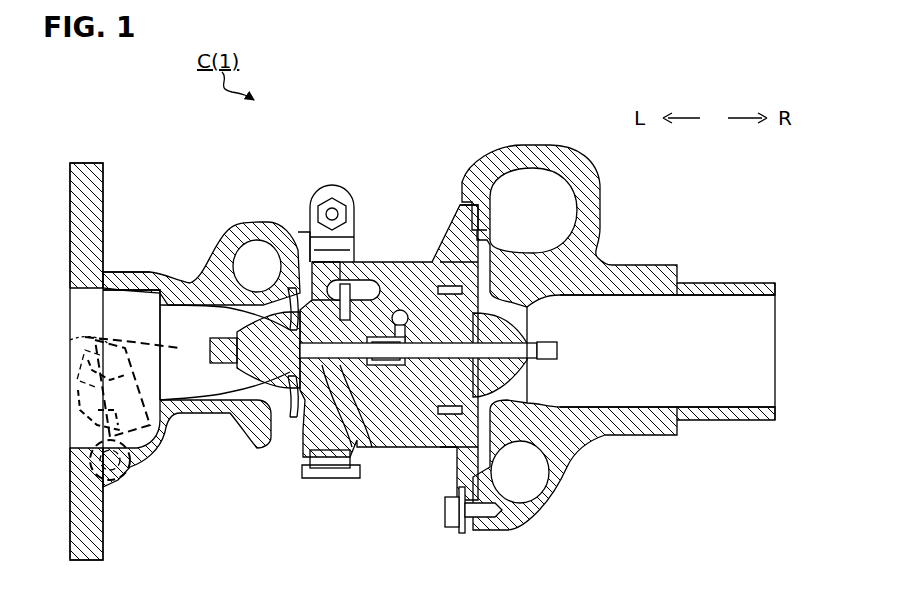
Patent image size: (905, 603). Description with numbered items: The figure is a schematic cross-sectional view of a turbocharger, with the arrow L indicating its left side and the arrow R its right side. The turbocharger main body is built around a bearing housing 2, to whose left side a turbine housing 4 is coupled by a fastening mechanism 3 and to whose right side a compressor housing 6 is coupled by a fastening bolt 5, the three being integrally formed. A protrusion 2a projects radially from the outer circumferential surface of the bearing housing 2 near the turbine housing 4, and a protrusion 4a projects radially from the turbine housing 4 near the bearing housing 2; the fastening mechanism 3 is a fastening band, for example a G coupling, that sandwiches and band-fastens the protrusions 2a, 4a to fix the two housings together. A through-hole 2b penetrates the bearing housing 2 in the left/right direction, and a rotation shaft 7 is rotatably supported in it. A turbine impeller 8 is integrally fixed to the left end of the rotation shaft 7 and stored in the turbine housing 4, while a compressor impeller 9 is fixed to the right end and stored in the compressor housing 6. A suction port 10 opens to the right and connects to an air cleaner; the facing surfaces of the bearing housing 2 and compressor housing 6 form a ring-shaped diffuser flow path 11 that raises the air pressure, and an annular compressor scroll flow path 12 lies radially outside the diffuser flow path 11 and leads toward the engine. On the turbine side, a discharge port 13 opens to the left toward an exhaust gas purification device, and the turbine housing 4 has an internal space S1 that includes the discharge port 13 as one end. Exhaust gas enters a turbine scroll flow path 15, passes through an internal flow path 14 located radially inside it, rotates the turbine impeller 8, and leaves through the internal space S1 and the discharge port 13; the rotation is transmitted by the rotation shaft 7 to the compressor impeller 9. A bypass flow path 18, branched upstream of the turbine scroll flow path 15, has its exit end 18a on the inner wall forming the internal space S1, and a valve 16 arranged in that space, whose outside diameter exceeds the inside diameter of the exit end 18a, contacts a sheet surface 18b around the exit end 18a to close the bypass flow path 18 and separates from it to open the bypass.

The bearing housing 2 is at (400, 262).
The protrusion 2a is at (345, 255).
The through-hole 2b is at (340, 382).
The fastening mechanism 3 is at (330, 186).
The turbine housing 4 is at (138, 272).
The protrusion 4a is at (310, 248).
The fastening bolt 5 is at (452, 533).
The compressor housing 6 is at (525, 147).
The rotation shaft 7 is at (372, 378).
The turbine impeller 8 is at (135, 285).
The compressor impeller 9 is at (535, 378).
The suction port 10 is at (778, 383).
The diffuser flow path 11 is at (478, 250).
The compressor scroll flow path 12 is at (540, 466).
The discharge port 13 is at (70, 340).
The internal flow path 14 is at (228, 280).
The turbine scroll flow path 15 is at (255, 252).
The valve 16 is at (90, 450).
The bypass flow path 18 is at (85, 334).
The exit end 18a is at (78, 392).
The sheet surface 18b is at (88, 362).
The internal space S1 is at (131, 345).